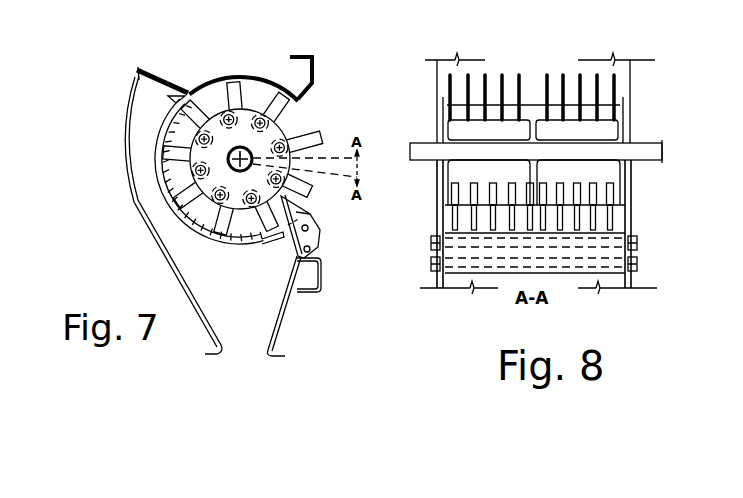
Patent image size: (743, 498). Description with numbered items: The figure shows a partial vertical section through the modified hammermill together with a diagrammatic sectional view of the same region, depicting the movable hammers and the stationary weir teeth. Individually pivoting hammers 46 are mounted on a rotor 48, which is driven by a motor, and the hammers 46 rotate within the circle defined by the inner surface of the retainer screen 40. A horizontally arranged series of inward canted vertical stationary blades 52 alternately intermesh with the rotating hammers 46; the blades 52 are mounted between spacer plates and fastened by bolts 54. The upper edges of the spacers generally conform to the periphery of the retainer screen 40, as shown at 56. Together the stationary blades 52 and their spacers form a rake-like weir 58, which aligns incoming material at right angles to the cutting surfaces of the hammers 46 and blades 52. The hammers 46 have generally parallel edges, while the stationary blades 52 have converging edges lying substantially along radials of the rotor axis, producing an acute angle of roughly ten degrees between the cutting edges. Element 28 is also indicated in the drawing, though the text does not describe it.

In FIG. 8, the roller 28 is at (563, 274).
In FIG. 7, the retainer screen 40 is at (222, 240).
In FIG. 7, the hammers 46 is at (314, 132).
In FIG. 8, the hammers 46 is at (546, 78).
In FIG. 7, the rotor 48 is at (296, 114).
In FIG. 7, the stationary blades 52 is at (319, 231).
In FIG. 7, the bolts 54 is at (322, 243).
In FIG. 8, the bolts 54 is at (638, 264).
In FIG. 7, the upper edges of the spacers 56 is at (304, 218).
In FIG. 8, the weir 58 is at (637, 210).